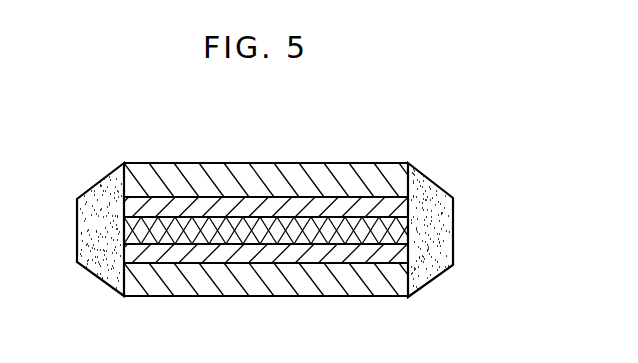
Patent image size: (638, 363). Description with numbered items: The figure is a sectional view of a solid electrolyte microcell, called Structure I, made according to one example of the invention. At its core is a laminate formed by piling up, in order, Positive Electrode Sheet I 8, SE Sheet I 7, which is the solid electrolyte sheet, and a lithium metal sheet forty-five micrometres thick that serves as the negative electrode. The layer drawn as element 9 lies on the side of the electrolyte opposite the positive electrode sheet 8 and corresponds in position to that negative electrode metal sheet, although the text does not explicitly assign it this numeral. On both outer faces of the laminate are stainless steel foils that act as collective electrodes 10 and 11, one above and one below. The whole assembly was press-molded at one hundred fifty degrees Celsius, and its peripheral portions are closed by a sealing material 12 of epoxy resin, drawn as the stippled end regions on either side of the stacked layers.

The SE Sheet I 7 is at (368, 213).
The Positive Electrode Sheet I 8 is at (287, 206).
The lower intermediate layer 9 is at (193, 258).
The collective electrode 10 is at (197, 167).
The collective electrode 11 is at (297, 291).
The sealing material 12 is at (95, 266).